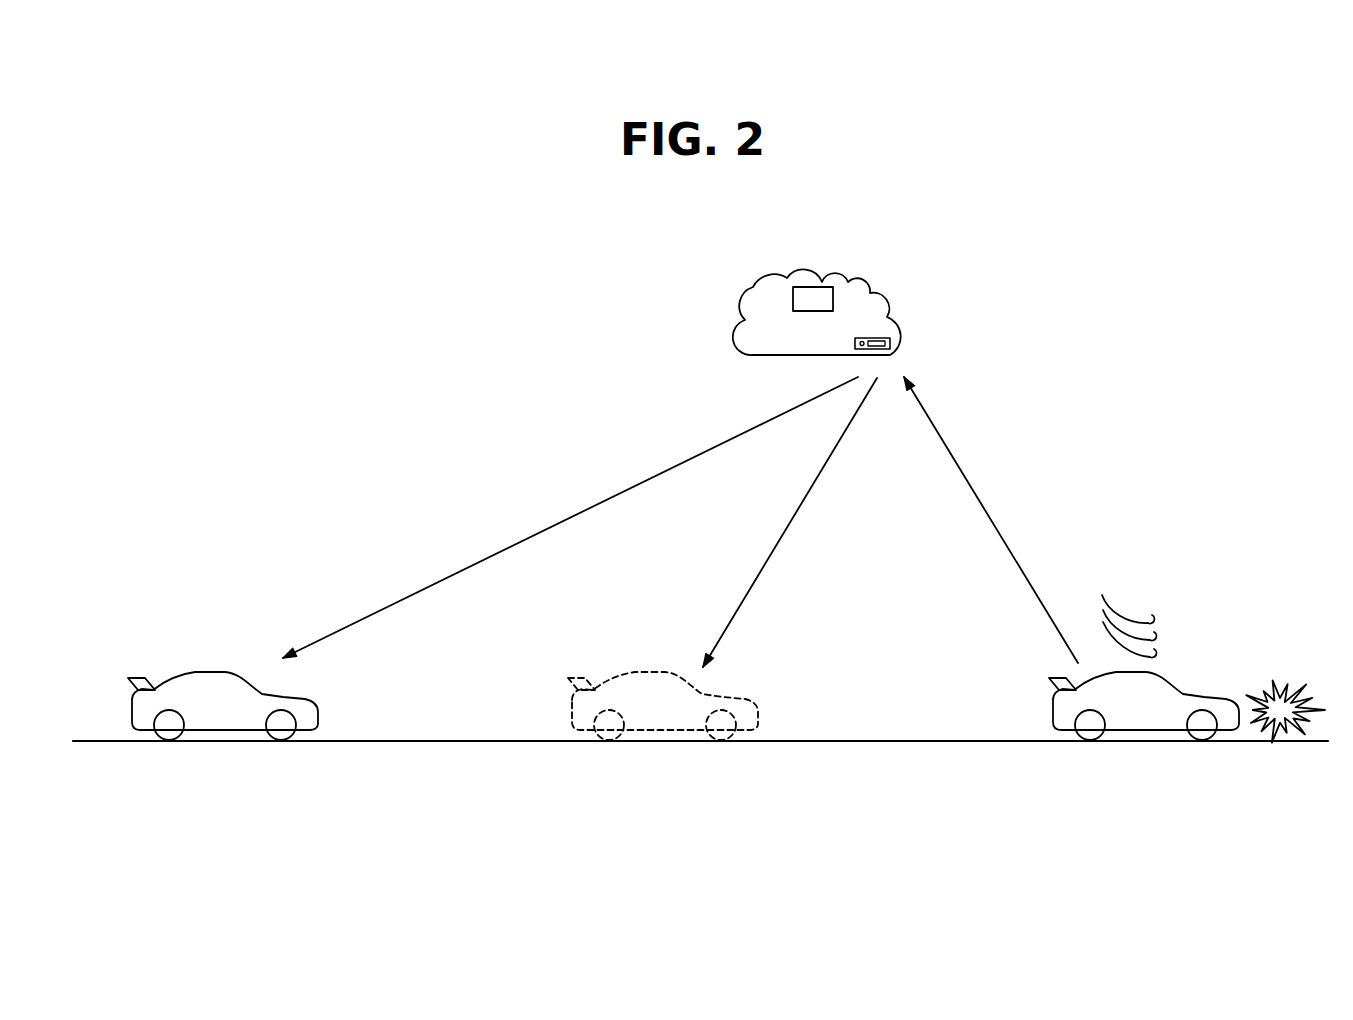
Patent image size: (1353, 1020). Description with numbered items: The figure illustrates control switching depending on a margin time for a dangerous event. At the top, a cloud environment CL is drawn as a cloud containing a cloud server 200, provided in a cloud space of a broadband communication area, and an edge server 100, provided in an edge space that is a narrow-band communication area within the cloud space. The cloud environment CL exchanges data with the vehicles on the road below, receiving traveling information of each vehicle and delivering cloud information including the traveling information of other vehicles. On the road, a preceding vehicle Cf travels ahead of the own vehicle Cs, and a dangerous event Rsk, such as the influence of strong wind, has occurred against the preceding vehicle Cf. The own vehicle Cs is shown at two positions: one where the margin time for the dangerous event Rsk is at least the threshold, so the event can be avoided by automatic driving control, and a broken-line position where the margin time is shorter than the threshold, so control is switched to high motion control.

The cloud environment CL is at (737, 306).
The cloud server 200 is at (829, 287).
The edge server 100 is at (890, 343).
The own vehicle Cs is at (213, 670).
The preceding vehicle Cf is at (1053, 716).
The dangerous event Rsk is at (1187, 612).